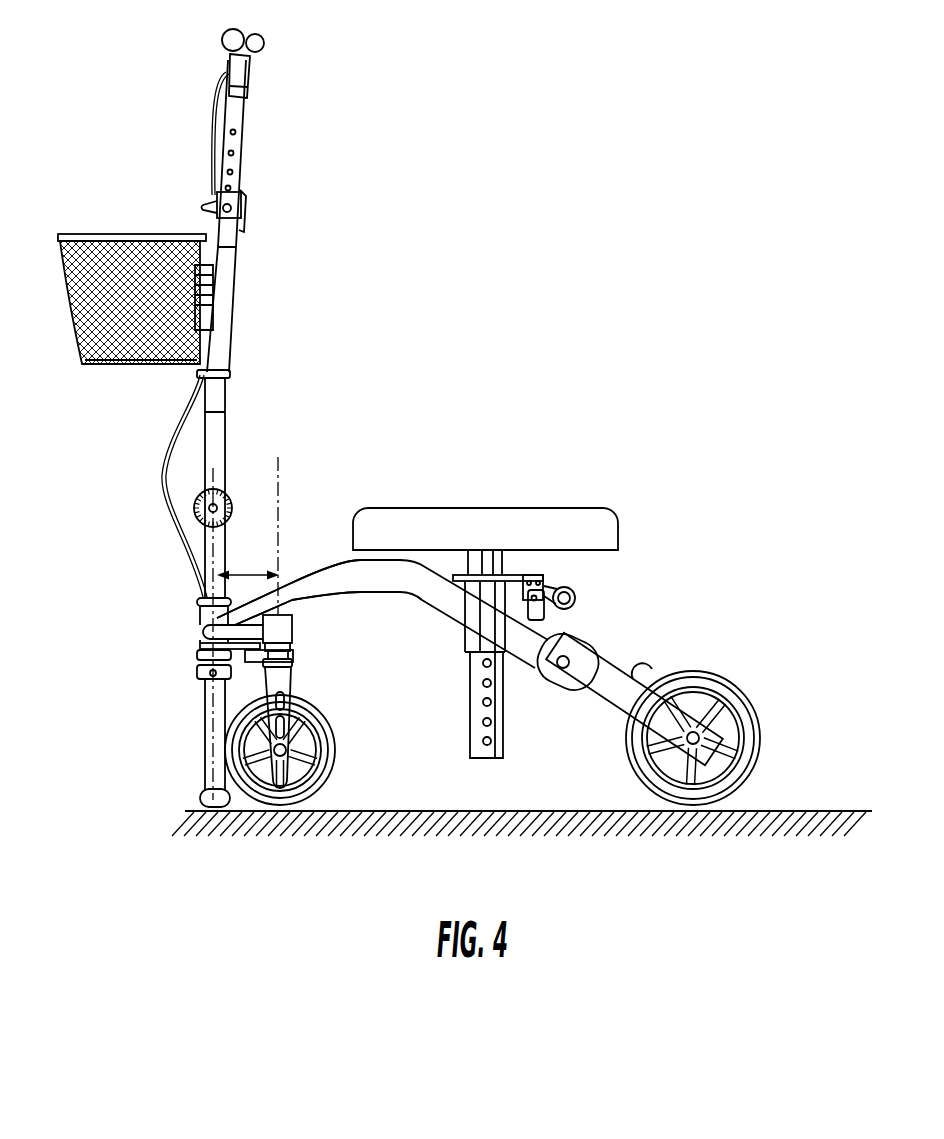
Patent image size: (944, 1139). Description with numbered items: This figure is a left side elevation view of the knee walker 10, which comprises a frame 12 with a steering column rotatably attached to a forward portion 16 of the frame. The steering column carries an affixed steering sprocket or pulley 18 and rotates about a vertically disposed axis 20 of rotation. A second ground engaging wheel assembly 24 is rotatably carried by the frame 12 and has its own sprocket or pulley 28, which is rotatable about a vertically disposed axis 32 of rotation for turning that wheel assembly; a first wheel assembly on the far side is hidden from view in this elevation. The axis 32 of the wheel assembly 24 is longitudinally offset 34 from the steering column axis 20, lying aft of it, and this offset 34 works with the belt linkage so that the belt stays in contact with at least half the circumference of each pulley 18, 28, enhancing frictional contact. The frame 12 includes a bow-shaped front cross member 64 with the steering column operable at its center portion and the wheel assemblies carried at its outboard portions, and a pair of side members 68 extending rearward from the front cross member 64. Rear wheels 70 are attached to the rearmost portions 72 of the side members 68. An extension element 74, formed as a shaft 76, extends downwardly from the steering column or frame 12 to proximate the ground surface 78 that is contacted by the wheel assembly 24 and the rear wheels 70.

The knee walker 10 is at (124, 62).
The frame 12 is at (440, 587).
The forward portion 16 is at (300, 580).
The steering sprocket or pulley 18 is at (200, 655).
The axis of rotation 20 is at (213, 561).
The second ground engaging wheel assembly 24 is at (302, 679).
The sprocket or pulley 28 is at (294, 642).
The axis of rotation 32 is at (278, 470).
The offset 34 is at (250, 572).
The front cross member 64 is at (206, 631).
The side members 68 is at (536, 644).
The rear wheels 70 is at (705, 672).
The rearmost portions 72 is at (628, 702).
The extension element 74 is at (208, 712).
The shaft 76 is at (188, 803).
The ground surface 78 is at (352, 800).